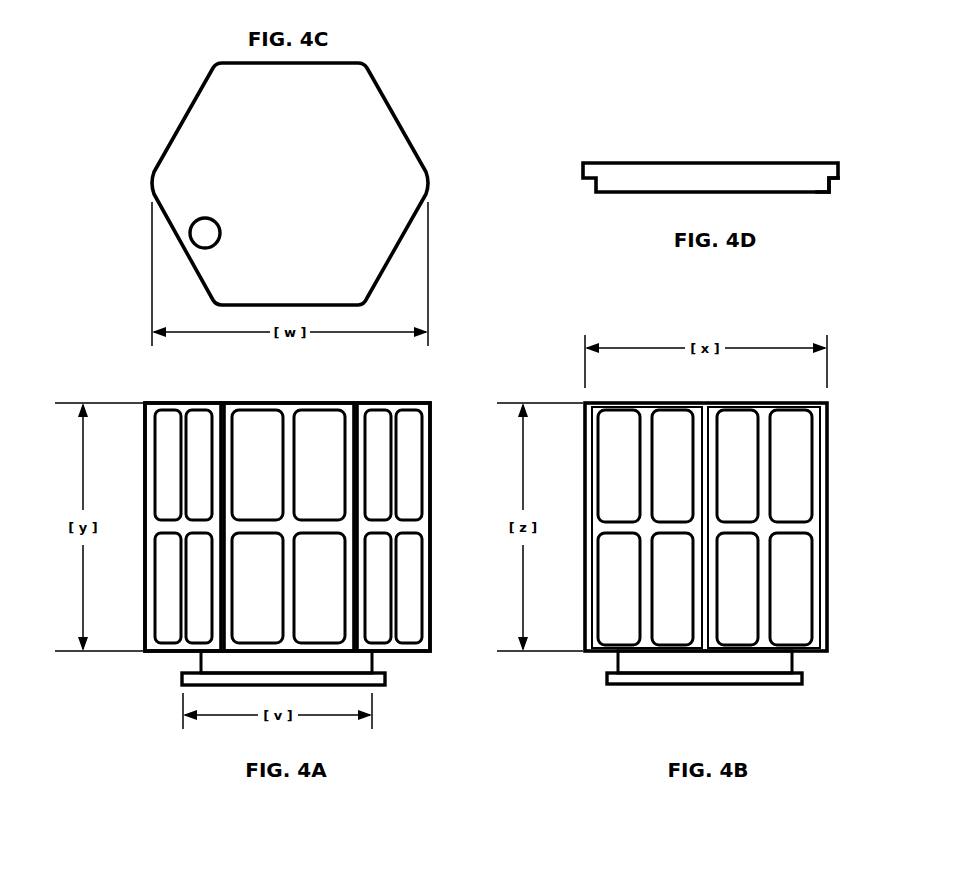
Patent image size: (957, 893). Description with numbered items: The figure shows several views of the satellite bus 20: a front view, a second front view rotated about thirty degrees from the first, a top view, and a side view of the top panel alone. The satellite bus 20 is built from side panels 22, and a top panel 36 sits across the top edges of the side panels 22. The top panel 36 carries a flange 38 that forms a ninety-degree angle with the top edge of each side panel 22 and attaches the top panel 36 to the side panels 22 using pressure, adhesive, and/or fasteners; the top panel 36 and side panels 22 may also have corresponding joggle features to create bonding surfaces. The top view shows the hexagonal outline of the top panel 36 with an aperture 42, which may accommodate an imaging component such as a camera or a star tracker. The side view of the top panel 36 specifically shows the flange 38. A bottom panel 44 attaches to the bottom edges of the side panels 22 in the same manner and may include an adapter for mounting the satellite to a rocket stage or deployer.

In FIG. 4A, the satellite bus 20 is at (98, 336).
In FIG. 4A, the side panel 22 is at (152, 605).
In FIG. 4C, the top panel 36 is at (190, 113).
In FIG. 4D, the top panel 36 is at (818, 163).
In FIG. 4D, the flange 38 is at (832, 181).
In FIG. 4C, the aperture 42 is at (218, 223).
In FIG. 4A, the bottom panel 44 is at (374, 658).
In FIG. 4B, the bottom panel 44 is at (794, 658).